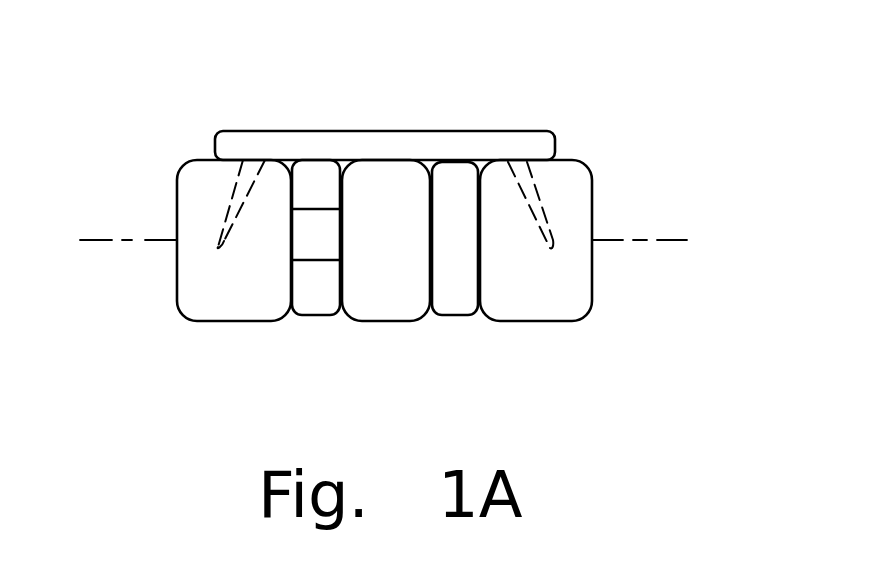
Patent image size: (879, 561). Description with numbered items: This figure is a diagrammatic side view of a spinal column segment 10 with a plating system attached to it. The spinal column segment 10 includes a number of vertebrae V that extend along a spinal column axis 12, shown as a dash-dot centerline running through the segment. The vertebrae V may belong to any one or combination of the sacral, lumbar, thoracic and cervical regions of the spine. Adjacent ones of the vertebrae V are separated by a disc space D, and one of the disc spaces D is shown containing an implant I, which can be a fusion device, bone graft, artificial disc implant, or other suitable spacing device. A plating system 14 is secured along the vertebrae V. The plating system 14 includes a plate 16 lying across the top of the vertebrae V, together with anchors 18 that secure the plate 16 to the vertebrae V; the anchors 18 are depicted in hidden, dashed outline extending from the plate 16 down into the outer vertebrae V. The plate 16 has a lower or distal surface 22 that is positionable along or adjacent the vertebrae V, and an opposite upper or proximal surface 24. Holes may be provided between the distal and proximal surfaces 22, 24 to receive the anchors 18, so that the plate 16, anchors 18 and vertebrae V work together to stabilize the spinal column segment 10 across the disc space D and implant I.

The spinal column segment 10 is at (135, 317).
The spinal column axis 12 is at (687, 240).
The plating system 14 is at (610, 70).
The plate 16 is at (560, 133).
The anchors 18 is at (253, 193).
The distal surface 22 is at (230, 160).
The proximal surface 24 is at (460, 131).
The vertebrae V is at (230, 323).
The implant I is at (312, 260).
The disc space D is at (315, 317).